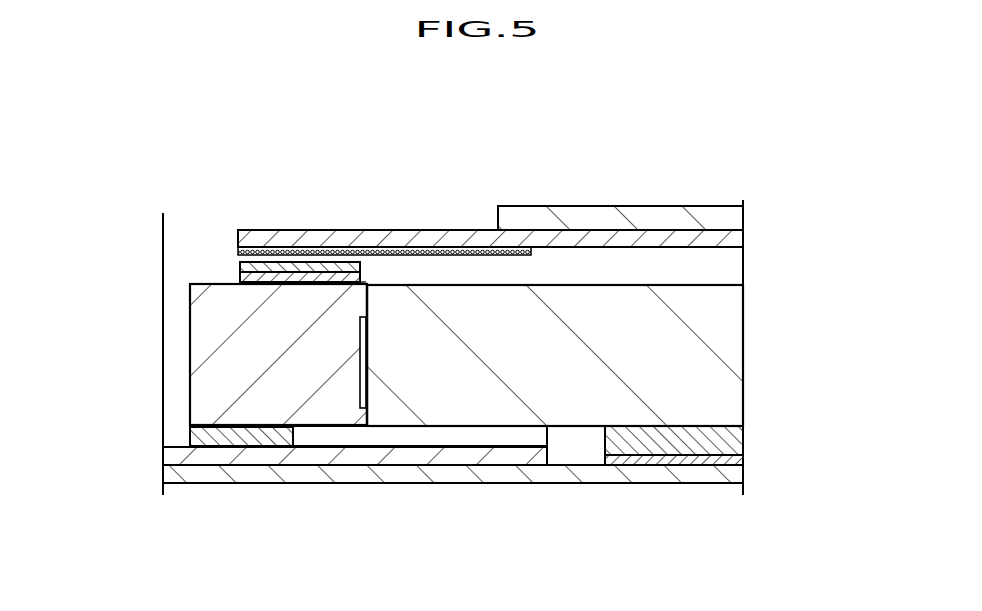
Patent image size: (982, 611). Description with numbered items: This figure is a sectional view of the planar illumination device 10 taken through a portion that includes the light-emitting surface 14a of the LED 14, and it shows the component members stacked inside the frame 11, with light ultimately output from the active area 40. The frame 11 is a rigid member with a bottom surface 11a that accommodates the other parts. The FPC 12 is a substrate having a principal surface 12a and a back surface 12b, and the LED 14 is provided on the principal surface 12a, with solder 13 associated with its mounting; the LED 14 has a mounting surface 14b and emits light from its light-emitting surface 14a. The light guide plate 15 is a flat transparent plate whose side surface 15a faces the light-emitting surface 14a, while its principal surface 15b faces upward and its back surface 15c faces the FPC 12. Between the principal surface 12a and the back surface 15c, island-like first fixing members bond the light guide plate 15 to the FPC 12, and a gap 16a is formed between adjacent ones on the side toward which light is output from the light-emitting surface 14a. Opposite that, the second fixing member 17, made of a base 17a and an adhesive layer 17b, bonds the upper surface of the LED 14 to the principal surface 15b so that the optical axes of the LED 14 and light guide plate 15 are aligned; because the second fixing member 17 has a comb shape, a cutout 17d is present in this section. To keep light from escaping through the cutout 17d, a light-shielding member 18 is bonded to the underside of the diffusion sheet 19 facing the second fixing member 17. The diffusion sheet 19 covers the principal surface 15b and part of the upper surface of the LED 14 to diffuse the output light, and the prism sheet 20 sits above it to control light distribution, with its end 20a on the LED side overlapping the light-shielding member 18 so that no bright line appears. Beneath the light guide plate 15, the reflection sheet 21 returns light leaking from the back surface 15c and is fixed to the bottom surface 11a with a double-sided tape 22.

The planar illumination device 10 is at (567, 138).
The frame 11 is at (635, 476).
The bottom surface 11a is at (585, 465).
The FPC 12 is at (378, 456).
The principal surface 12a is at (328, 428).
The back surface 12b is at (416, 465).
The solder 13 is at (244, 440).
The LED 14 is at (262, 341).
The light-emitting surface 14a is at (366, 382).
The mounting surface 14b is at (225, 441).
The light guide plate 15 is at (683, 352).
The side surface 15a is at (361, 308).
The principal surface 15b is at (661, 283).
The back surface 15c is at (585, 427).
The gap 16a is at (481, 443).
The second fixing member 17 is at (100, 203).
The base 17a is at (242, 266).
The adhesive layer 17b is at (242, 279).
The cutout 17d is at (411, 268).
The light-shielding member 18 is at (466, 246).
The diffusion sheet 19 is at (742, 240).
The prism sheet 20 is at (742, 213).
The end 20a is at (515, 218).
The reflection sheet 21 is at (742, 448).
The double-sided tape 22 is at (742, 478).
The active area 40 is at (665, 197).